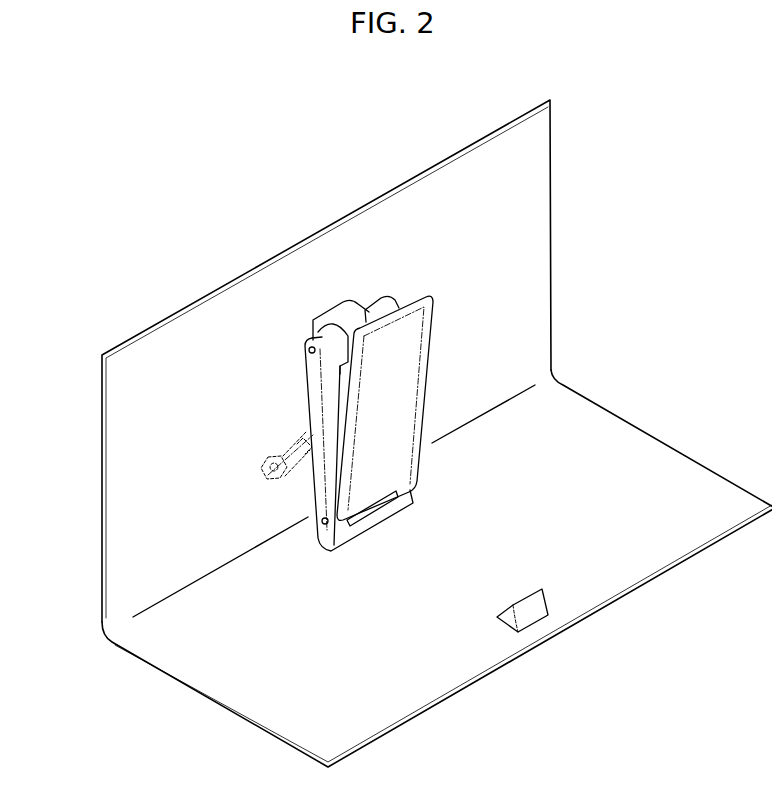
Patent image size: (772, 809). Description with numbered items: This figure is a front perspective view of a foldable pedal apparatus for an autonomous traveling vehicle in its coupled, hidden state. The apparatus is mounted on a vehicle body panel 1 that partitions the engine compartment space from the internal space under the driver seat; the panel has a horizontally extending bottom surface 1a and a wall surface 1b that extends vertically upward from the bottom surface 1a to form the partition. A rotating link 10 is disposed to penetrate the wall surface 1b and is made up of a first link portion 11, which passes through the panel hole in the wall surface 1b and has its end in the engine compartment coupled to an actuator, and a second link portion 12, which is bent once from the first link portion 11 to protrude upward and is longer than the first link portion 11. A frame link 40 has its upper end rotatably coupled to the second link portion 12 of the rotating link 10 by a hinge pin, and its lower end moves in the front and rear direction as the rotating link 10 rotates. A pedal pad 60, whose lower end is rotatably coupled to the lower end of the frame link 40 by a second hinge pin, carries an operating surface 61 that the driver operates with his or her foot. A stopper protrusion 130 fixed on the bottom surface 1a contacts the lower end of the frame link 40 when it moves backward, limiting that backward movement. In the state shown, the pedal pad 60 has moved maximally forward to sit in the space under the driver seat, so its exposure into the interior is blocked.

The vehicle body panel 1 is at (437, 417).
The bottom surface 1a is at (675, 470).
The wall surface 1b is at (465, 174).
The rotating link 10 is at (322, 310).
The first link portion 11 is at (313, 477).
The second link portion 12 is at (340, 317).
The frame link 40 is at (307, 380).
The pedal pad 60 is at (501, 379).
The operating surface 61 is at (400, 373).
The stopper protrusion 130 is at (530, 612).